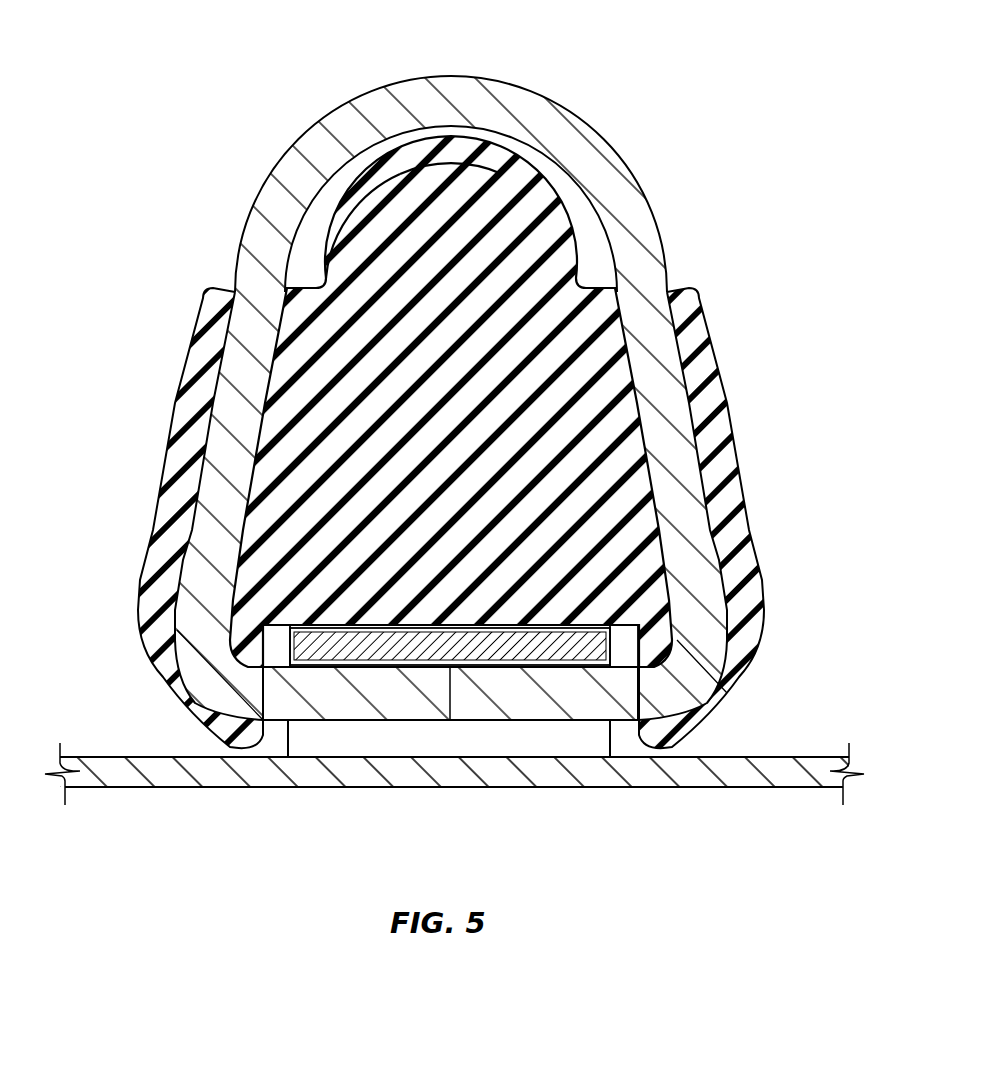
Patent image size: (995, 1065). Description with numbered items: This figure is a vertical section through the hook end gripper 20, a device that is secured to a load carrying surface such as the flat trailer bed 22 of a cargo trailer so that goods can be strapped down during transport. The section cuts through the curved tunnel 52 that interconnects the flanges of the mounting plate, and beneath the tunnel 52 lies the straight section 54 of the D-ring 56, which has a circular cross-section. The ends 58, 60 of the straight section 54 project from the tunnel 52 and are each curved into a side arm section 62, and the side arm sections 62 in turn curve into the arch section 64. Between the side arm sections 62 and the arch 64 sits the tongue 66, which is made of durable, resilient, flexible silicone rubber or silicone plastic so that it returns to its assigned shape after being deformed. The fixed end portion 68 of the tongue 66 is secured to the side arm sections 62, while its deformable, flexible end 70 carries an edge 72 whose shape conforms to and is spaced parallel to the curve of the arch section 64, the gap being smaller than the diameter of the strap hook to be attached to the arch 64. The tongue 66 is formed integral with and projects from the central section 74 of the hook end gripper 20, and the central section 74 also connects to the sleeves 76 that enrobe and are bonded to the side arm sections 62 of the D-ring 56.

The hook end gripper 20 is at (497, 532).
The trailer bed 22 is at (658, 775).
The curved tunnel 52 is at (333, 645).
The straight section 54 is at (450, 688).
The D-ring 56 is at (497, 532).
The end 58 is at (235, 682).
The end 60 is at (683, 690).
The side arm section 62 is at (205, 515).
The arch section 64 is at (470, 82).
The tongue 66 is at (543, 182).
The fixed end portion 68 is at (332, 317).
The deformable, flexible end 70 is at (357, 245).
The edge 72 is at (378, 188).
The central section 74 is at (497, 532).
The sleeves 76 is at (162, 481).